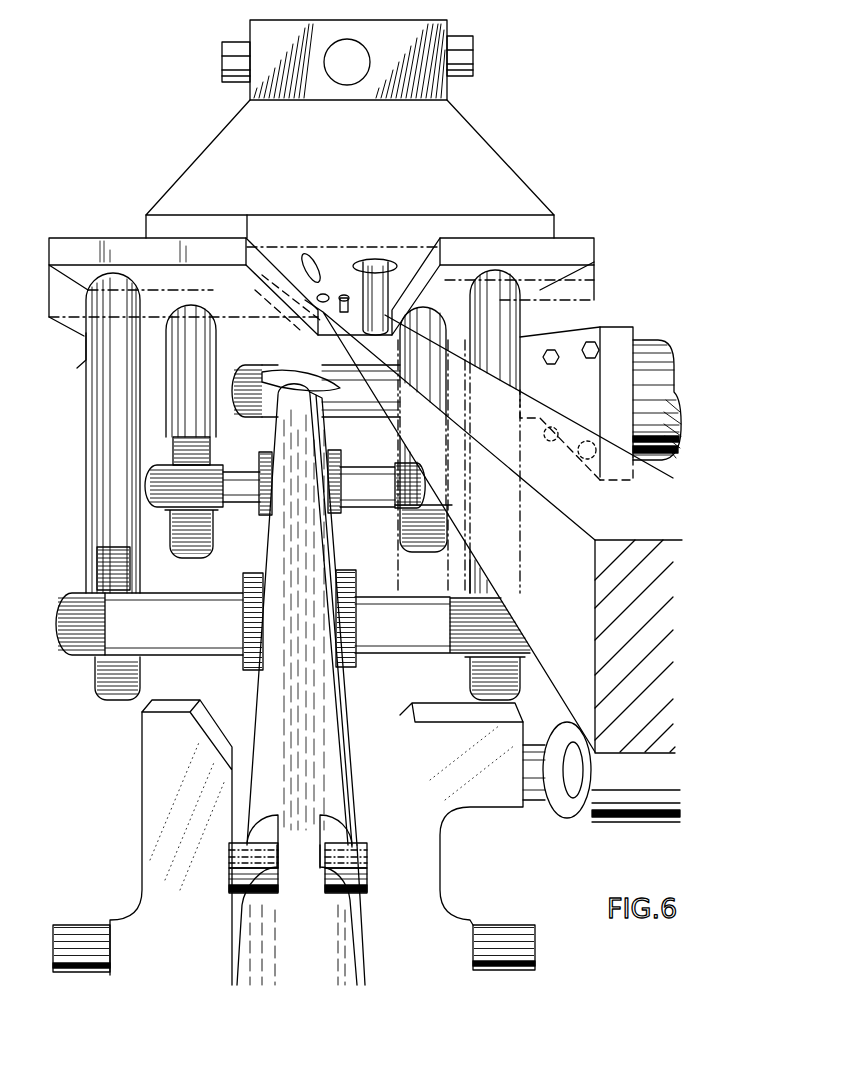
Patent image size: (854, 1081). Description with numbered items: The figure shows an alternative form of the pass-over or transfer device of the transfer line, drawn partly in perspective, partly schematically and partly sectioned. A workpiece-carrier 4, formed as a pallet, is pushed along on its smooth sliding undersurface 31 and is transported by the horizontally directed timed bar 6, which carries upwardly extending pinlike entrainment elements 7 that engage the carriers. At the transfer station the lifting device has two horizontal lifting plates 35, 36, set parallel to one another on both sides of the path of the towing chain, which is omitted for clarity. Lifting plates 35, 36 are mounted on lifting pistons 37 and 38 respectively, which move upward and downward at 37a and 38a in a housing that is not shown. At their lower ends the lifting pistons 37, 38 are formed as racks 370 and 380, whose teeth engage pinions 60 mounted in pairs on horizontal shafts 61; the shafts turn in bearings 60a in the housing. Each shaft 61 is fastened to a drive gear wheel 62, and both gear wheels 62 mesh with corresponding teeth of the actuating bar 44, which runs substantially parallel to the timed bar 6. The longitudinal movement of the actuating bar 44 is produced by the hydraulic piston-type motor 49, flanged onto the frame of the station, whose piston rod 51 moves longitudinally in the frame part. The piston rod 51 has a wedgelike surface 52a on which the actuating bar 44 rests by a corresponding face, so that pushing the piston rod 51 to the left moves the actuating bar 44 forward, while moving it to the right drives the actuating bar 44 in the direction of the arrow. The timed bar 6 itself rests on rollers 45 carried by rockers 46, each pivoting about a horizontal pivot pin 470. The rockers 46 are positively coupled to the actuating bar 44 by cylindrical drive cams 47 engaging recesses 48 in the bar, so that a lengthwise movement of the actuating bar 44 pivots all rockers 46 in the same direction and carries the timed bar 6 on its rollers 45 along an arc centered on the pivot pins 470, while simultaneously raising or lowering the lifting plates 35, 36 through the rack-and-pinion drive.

The workpiece-carrier 4 is at (482, 147).
The entrainment element 7 is at (341, 296).
The sliding undersurface 31 is at (412, 245).
The lifting plate 35 is at (578, 244).
The lifting plate 36 is at (90, 248).
The lifting piston 37 is at (437, 325).
The guide location of lifting piston 37a is at (457, 565).
The rack end of lifting piston 370 is at (420, 532).
The lifting piston 38 is at (180, 390).
The guide location of lifting piston 38a is at (82, 357).
The rack end of lifting piston 380 is at (197, 545).
The hydraulic piston-type motor 49 is at (618, 337).
The roller 45 is at (603, 805).
The timed bar 6 is at (562, 682).
The wedgelike surface 52a is at (268, 410).
The piston rod 51 is at (345, 407).
The pinion 60 is at (405, 475).
The bearing 60a is at (387, 455).
The horizontal shaft 61 is at (168, 648).
The drive gear wheel 62 is at (338, 573).
The actuating bar 44 is at (338, 713).
The cylindrical drive cam 47 is at (240, 853).
The recess 48 is at (262, 828).
The rocker 46 is at (428, 850).
The pivot pin 470 is at (507, 935).